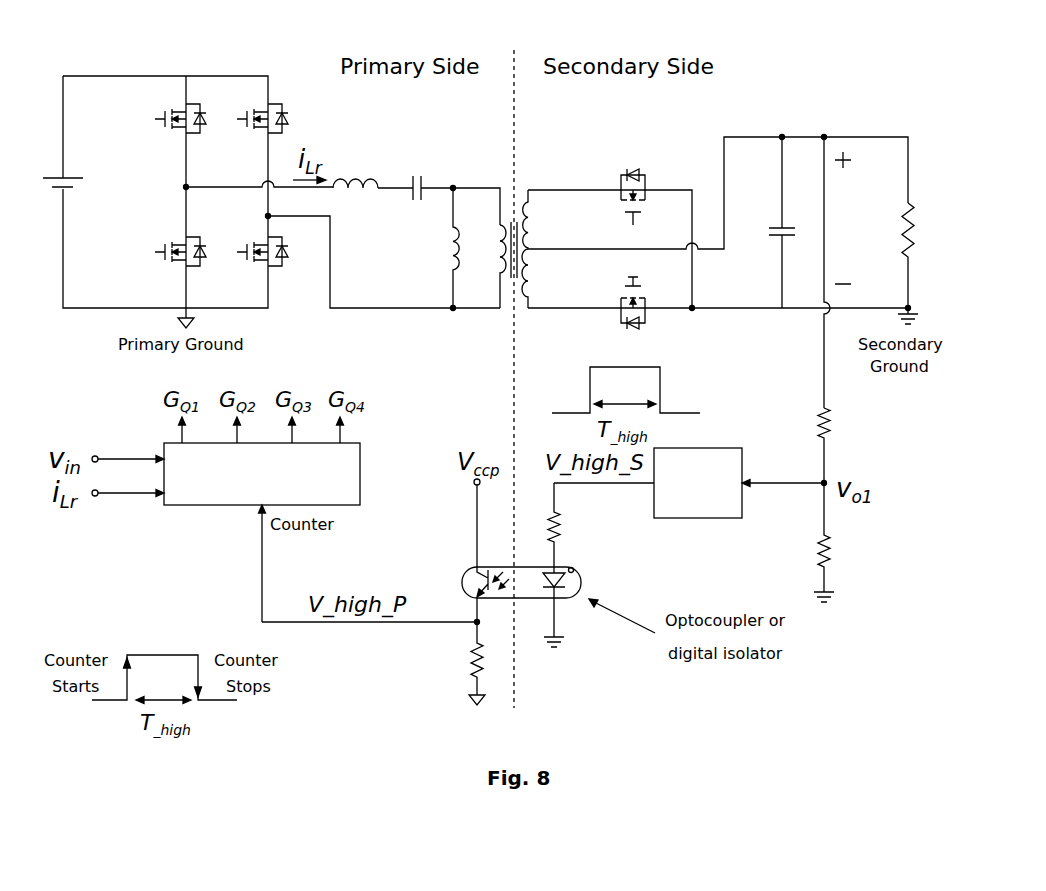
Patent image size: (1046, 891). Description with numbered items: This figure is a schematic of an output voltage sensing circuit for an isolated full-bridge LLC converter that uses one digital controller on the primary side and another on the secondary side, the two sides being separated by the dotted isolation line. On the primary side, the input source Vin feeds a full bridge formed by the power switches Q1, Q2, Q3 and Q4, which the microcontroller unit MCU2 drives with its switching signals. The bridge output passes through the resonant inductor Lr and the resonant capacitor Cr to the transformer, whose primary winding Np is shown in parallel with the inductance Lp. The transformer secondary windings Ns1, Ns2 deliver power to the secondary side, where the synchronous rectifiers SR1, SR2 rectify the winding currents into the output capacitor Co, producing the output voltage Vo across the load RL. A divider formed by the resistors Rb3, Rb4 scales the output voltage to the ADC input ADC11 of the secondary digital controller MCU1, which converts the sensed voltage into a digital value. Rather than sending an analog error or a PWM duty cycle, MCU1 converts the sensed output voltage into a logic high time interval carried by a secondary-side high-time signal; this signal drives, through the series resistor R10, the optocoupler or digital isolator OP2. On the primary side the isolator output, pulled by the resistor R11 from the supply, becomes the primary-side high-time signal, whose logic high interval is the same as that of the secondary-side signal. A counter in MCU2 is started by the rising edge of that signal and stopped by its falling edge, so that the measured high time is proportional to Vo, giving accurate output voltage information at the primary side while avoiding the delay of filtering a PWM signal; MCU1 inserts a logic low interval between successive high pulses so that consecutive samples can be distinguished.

The input voltage source Vin is at (77, 162).
The power switch Q1 is at (178, 133).
The power switch Q2 is at (178, 268).
The power switch Q3 is at (260, 133).
The power switch Q4 is at (260, 268).
The resonant inductor Lr is at (355, 208).
The resonant capacitor Cr is at (419, 207).
The magnetizing inductor Lp is at (437, 248).
The transformer primary winding Np is at (487, 263).
The transformer secondary winding Ns1 is at (547, 220).
The transformer secondary winding Ns2 is at (547, 278).
The first synchronous rectifier SR1 is at (653, 186).
The second synchronous rectifier SR2 is at (653, 296).
The output capacitor Co is at (764, 222).
The output voltage Vo is at (844, 272).
The load resistor RL is at (929, 255).
The voltage divider resistor Rb3 is at (847, 445).
The voltage divider resistor Rb4 is at (844, 542).
The ADC input ADC11 is at (783, 476).
The digital controller MCU1 is at (698, 483).
The microcontroller unit MCU2 is at (262, 474).
The optocoupler LED resistor R10 is at (601, 528).
The optocoupler pull-down resistor R11 is at (457, 651).
The optocoupler or digital isolator OP2 is at (547, 606).